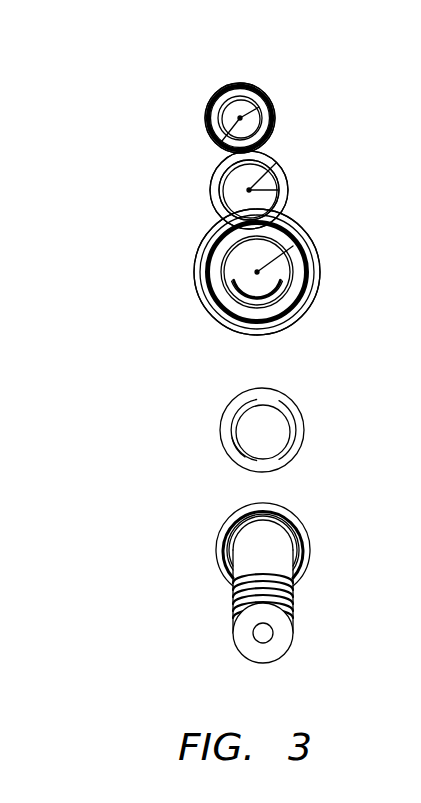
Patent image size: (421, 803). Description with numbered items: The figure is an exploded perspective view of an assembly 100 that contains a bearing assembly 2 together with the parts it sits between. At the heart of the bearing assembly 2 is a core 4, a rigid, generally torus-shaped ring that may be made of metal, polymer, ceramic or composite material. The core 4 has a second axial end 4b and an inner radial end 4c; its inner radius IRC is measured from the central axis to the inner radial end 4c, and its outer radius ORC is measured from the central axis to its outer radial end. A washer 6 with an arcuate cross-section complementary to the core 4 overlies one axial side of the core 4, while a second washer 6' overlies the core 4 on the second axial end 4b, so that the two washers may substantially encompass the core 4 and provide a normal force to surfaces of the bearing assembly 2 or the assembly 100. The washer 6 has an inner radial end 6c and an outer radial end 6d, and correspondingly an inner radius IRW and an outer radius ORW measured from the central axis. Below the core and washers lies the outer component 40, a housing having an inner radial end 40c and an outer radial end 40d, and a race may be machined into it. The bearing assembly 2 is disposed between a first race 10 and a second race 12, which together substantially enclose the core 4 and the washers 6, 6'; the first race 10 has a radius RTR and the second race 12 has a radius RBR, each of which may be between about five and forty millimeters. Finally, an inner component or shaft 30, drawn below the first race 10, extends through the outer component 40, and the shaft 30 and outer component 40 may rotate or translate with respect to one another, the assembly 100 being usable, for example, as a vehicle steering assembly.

The assembly 100 is at (126, 66).
The bearing assembly 2 is at (124, 262).
The core 4 is at (274, 115).
The second axial end 4b is at (276, 130).
The inner radial end 4c is at (254, 98).
The washer 6 is at (274, 190).
The inner radial end 6c is at (282, 208).
The outer radial end 6d is at (211, 197).
The second washer 6' is at (293, 434).
The outer component 40 is at (196, 290).
The inner radial end 40c is at (265, 312).
The outer radial end 40d is at (308, 316).
The second race 12 is at (297, 283).
The first race 10 is at (309, 566).
The shaft 30 is at (296, 616).
The outer radius of the core ORC is at (218, 128).
The inner radius of the core IRC is at (264, 102).
The outer radius of the washer ORW is at (277, 163).
The inner radius of the washer IRW is at (237, 176).
The radius of the second race RBR is at (295, 247).
The radius of the first race RTR is at (298, 522).